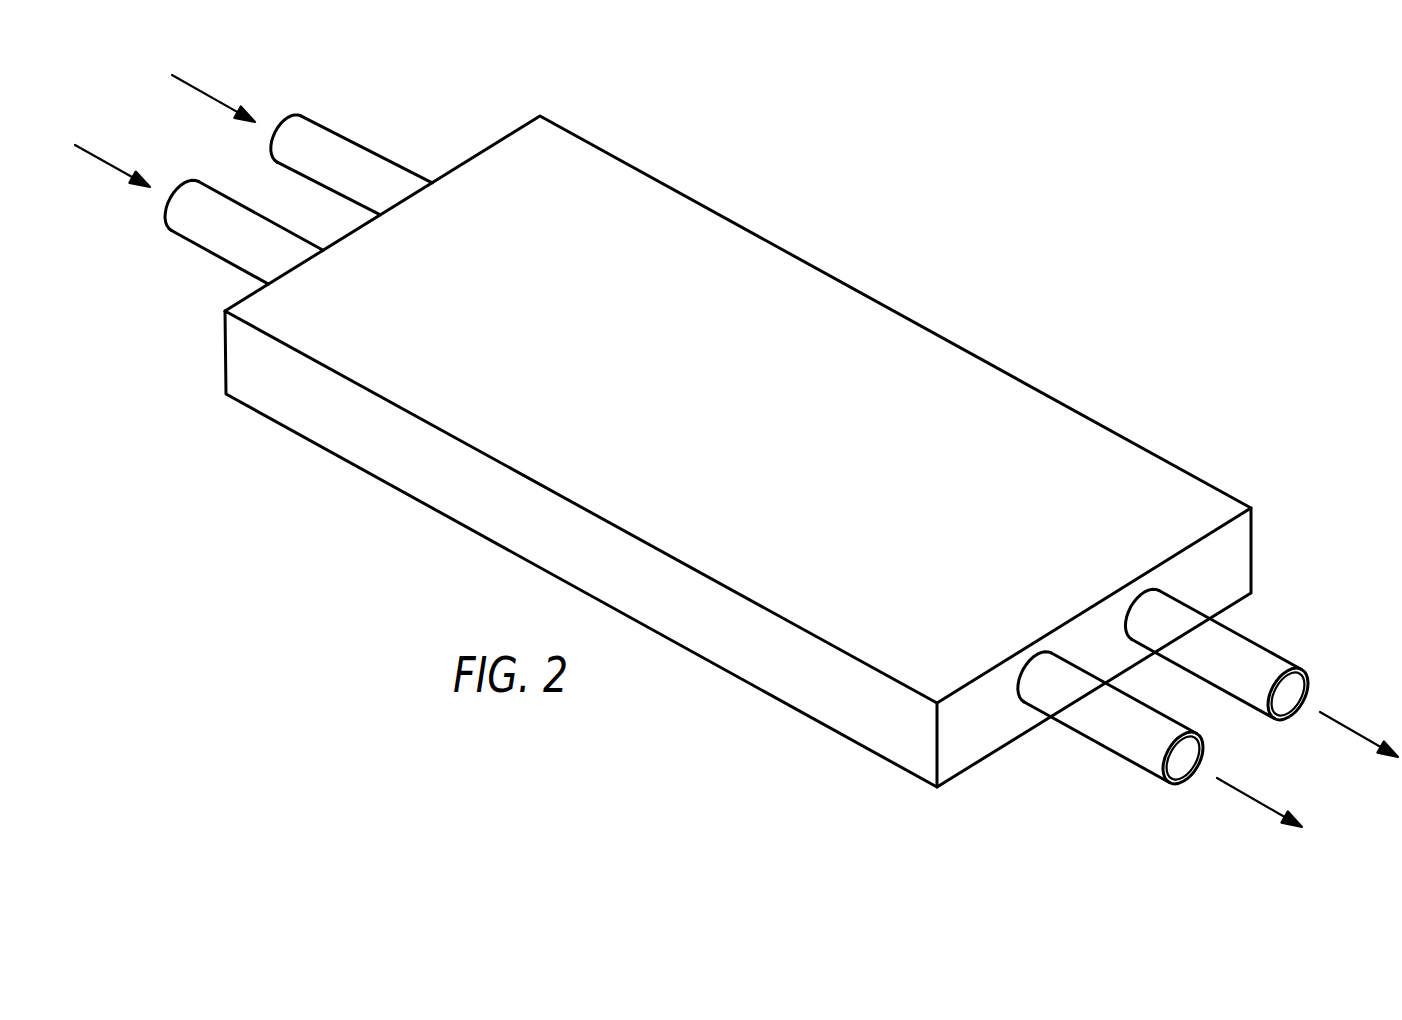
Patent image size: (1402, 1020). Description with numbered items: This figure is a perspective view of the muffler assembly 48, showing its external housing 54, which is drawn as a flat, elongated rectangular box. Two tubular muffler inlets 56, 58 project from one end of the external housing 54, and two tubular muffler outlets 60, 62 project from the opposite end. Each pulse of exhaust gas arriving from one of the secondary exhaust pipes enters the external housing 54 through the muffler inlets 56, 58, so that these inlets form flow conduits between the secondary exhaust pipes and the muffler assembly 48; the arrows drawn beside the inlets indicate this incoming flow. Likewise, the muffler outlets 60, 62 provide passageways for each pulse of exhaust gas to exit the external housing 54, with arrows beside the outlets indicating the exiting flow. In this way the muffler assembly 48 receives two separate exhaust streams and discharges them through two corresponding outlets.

The muffler assembly 48 is at (736, 455).
The external housing 54 is at (963, 393).
The muffler inlet 56 is at (340, 150).
The muffler inlet 58 is at (203, 230).
The muffler outlet 60 is at (1242, 655).
The muffler outlet 62 is at (1112, 728).